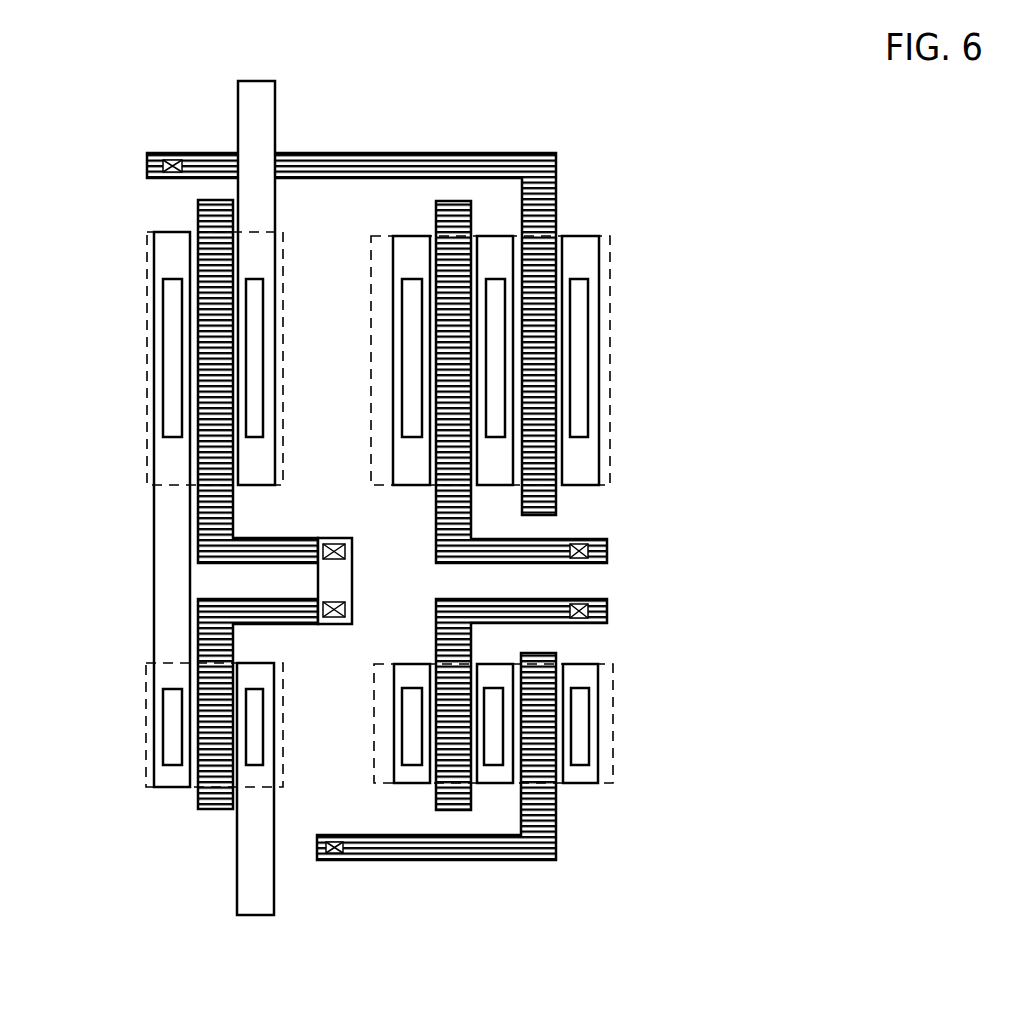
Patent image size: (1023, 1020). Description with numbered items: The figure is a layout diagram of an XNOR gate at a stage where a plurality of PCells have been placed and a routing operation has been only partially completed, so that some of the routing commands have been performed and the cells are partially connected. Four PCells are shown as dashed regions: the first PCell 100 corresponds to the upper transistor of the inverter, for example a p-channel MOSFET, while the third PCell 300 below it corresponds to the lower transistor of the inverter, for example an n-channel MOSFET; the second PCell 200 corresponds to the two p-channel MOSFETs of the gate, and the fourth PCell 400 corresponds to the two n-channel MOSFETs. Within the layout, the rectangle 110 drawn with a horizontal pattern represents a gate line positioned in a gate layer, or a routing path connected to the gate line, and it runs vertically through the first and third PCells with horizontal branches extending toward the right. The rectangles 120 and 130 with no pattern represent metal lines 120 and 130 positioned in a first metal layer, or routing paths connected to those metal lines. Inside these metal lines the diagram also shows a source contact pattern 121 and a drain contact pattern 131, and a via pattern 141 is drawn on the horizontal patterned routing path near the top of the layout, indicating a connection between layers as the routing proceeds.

The first PCell 100 is at (147, 275).
The gate line 110 is at (203, 218).
The metal line 120 is at (136, 498).
The source contact pattern 121 is at (172, 397).
The metal line 130 is at (258, 498).
The drain contact pattern 131 is at (258, 363).
The via pattern 141 is at (147, 156).
The second PCell 200 is at (610, 262).
The third PCell 300 is at (147, 698).
The fourth PCell 400 is at (613, 687).